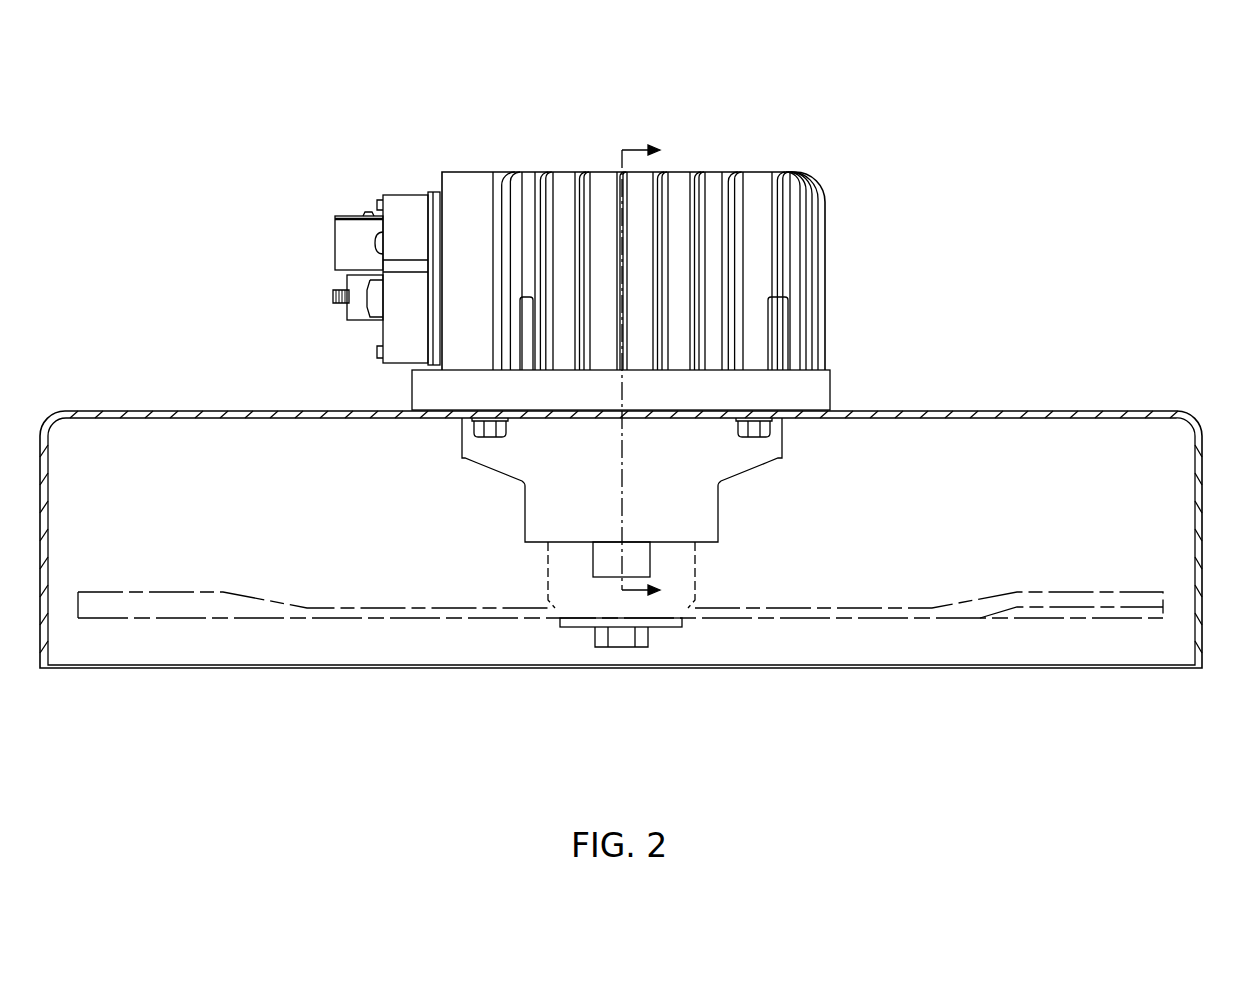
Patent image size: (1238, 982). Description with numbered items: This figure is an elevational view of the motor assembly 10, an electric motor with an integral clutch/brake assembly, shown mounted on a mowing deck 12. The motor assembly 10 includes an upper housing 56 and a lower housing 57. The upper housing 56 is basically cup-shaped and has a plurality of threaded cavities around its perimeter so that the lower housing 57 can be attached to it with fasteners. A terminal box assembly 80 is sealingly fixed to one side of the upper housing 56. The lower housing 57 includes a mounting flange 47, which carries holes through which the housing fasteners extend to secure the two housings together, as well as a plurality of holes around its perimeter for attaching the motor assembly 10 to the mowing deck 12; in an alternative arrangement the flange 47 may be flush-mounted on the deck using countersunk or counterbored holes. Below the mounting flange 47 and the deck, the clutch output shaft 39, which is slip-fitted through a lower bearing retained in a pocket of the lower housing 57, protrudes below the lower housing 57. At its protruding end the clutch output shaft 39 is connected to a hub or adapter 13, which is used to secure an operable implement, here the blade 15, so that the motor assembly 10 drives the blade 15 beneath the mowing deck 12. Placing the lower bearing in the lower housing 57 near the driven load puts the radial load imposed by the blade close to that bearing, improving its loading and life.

The motor assembly 10 is at (398, 126).
The mowing deck 12 is at (981, 410).
The hub or adapter 13 is at (548, 558).
The blade 15 is at (417, 607).
The clutch output shaft 39 is at (650, 560).
The mounting flange 47 is at (818, 390).
The upper housing 56 is at (482, 282).
The lower housing 57 is at (588, 506).
The terminal box assembly 80 is at (357, 349).